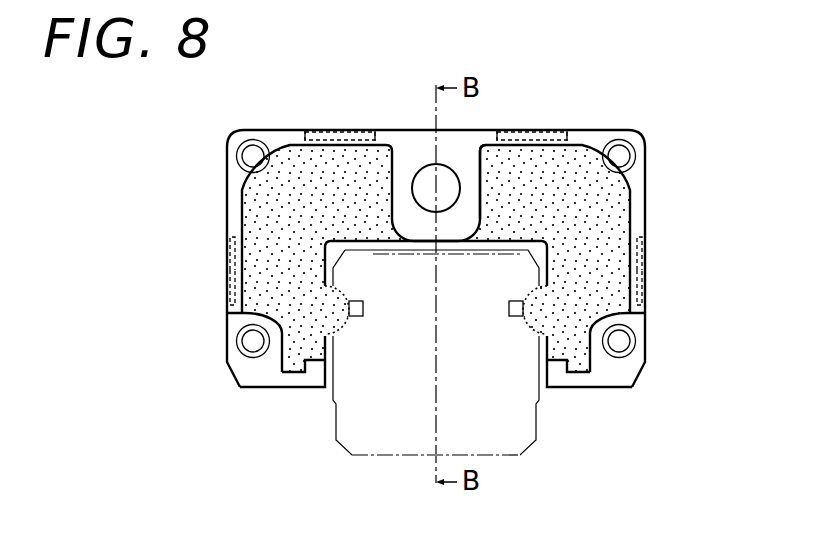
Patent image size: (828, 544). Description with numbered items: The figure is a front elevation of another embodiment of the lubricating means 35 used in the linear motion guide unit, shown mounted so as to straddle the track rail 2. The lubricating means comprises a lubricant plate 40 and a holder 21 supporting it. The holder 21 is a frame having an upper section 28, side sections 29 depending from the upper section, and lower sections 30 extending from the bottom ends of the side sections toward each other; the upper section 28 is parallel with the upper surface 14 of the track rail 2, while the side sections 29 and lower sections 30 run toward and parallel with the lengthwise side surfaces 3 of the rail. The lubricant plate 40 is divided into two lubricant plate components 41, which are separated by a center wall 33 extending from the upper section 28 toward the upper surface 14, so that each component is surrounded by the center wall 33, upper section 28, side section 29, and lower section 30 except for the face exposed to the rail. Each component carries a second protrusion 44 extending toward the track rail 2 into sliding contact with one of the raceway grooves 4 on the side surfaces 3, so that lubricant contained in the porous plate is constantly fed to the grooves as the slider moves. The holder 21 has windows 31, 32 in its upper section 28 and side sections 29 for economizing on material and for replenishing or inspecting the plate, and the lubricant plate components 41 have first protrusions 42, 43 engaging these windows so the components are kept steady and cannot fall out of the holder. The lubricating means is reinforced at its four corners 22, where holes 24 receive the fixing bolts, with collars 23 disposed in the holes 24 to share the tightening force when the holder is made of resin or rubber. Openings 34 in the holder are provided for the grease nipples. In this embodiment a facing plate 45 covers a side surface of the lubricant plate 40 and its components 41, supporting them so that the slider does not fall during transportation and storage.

The track rail 2 is at (407, 420).
The lengthwise side surfaces 3 is at (329, 362).
The raceway grooves 4 is at (348, 326).
The upper surface 14 is at (409, 249).
The holder 21 is at (470, 157).
The four corners 22 is at (450, 263).
The collars 23 is at (253, 140).
The holes 24 is at (245, 150).
The upper section 28 is at (587, 130).
The side sections 29 is at (228, 203).
The lower sections 30 is at (293, 382).
The window 31 is at (308, 135).
The window 32 is at (230, 240).
The center wall 33 is at (410, 155).
The openings 34 is at (441, 182).
The lubricating means 35 is at (647, 193).
The lubricant plate 40 is at (333, 167).
The lubricant plate components 41 is at (293, 248).
The first protrusion 42 is at (357, 138).
The first protrusion 43 is at (230, 270).
The second protrusions 44 is at (340, 287).
The facing plate 45 is at (242, 311).